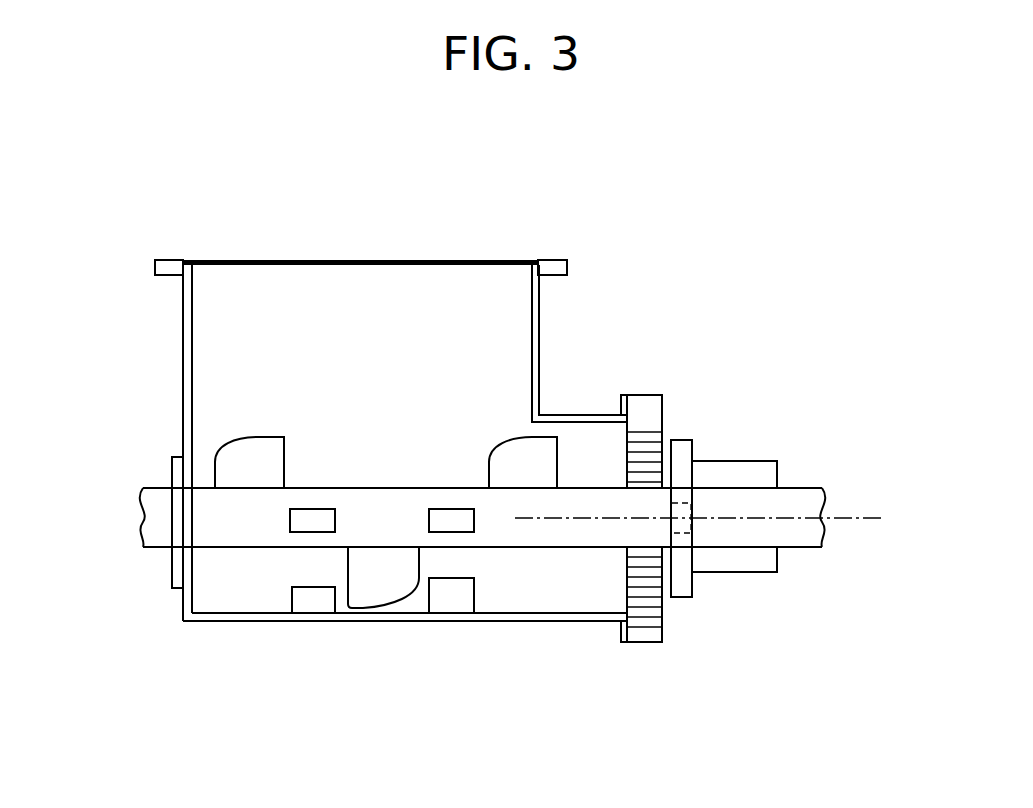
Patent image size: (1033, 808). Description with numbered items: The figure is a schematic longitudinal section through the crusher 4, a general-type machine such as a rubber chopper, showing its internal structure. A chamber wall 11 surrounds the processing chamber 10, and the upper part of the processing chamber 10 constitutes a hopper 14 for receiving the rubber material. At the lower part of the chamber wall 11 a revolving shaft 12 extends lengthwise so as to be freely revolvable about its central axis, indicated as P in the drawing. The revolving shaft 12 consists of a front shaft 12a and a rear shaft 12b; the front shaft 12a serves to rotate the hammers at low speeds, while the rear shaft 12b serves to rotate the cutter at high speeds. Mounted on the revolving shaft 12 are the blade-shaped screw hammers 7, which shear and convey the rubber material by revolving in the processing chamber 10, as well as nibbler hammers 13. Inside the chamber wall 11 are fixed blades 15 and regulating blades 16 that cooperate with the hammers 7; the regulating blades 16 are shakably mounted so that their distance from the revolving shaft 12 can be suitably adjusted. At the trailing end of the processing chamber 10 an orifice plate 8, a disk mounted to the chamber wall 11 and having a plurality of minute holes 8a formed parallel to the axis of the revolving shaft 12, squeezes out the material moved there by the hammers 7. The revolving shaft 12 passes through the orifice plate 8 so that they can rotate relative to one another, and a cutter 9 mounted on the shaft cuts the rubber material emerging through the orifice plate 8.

The crusher 4 is at (156, 313).
The screw hammers 7 is at (267, 452).
The orifice plate 8 is at (650, 415).
The minute holes 8a is at (650, 585).
The cutter 9 is at (686, 447).
The processing chamber 10 is at (338, 394).
The chamber wall 11 is at (183, 393).
The revolving shaft 12 is at (501, 486).
The front shaft 12a is at (157, 497).
The rear shaft 12b is at (793, 498).
The nibbler hammers 13 is at (453, 519).
The hopper 14 is at (436, 308).
The fixed blades 15 is at (317, 600).
The regulating blades 16 is at (456, 595).
The shaft axis P is at (860, 522).